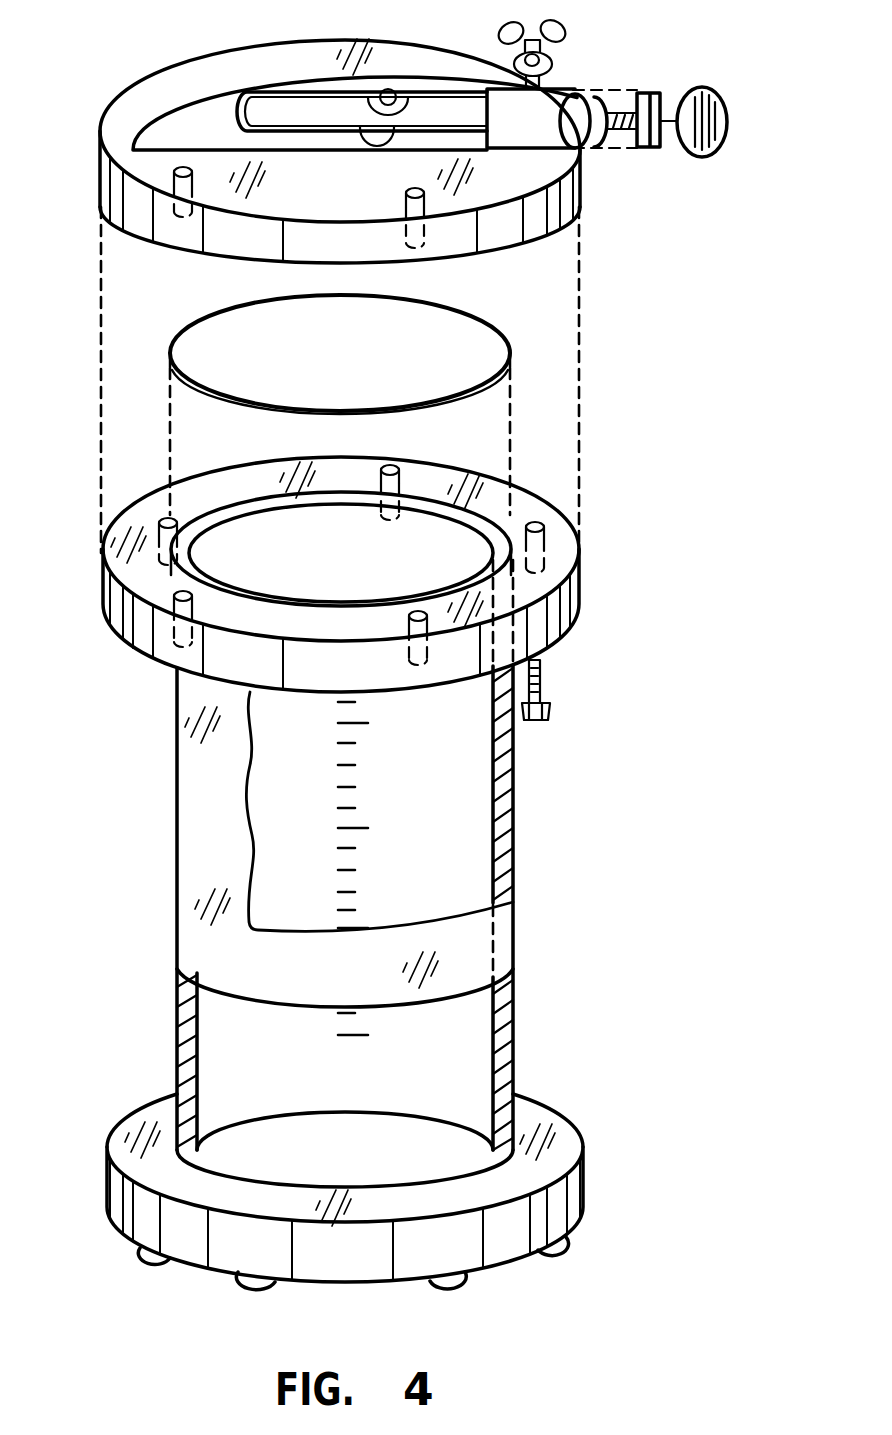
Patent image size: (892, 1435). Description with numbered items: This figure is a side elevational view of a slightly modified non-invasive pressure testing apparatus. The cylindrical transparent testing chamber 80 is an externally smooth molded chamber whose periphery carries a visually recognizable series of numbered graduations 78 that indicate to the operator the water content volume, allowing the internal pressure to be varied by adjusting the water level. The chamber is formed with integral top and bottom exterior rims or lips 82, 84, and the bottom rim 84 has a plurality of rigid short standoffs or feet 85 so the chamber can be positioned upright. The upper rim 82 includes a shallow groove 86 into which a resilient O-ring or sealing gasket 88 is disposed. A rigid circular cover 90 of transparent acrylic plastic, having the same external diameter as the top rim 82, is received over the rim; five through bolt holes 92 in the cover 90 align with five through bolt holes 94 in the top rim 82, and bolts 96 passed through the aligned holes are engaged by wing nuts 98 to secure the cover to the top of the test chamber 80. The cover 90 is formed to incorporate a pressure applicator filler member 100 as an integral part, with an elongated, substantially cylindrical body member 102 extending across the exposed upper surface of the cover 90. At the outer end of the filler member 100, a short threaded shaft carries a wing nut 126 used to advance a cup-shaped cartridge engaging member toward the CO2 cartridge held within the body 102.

The numbered graduations 78 is at (340, 792).
The cylindrical transparent testing chamber 80 is at (427, 926).
The top exterior rim 82 is at (390, 557).
The bottom exterior rim 84 is at (393, 1193).
The feet 85 is at (557, 1250).
The shallow groove 86 is at (493, 520).
The sealing gasket 88 is at (497, 323).
The circular cover 90 is at (537, 203).
The through bolt holes 92 is at (415, 248).
The through bolt holes 94 is at (395, 466).
The bolts 96 is at (542, 682).
The wing nuts 98 is at (500, 28).
The pressure applicator filler member 100 is at (482, 111).
The cylindrical body member 102 is at (190, 118).
The wing nut 126 is at (718, 160).